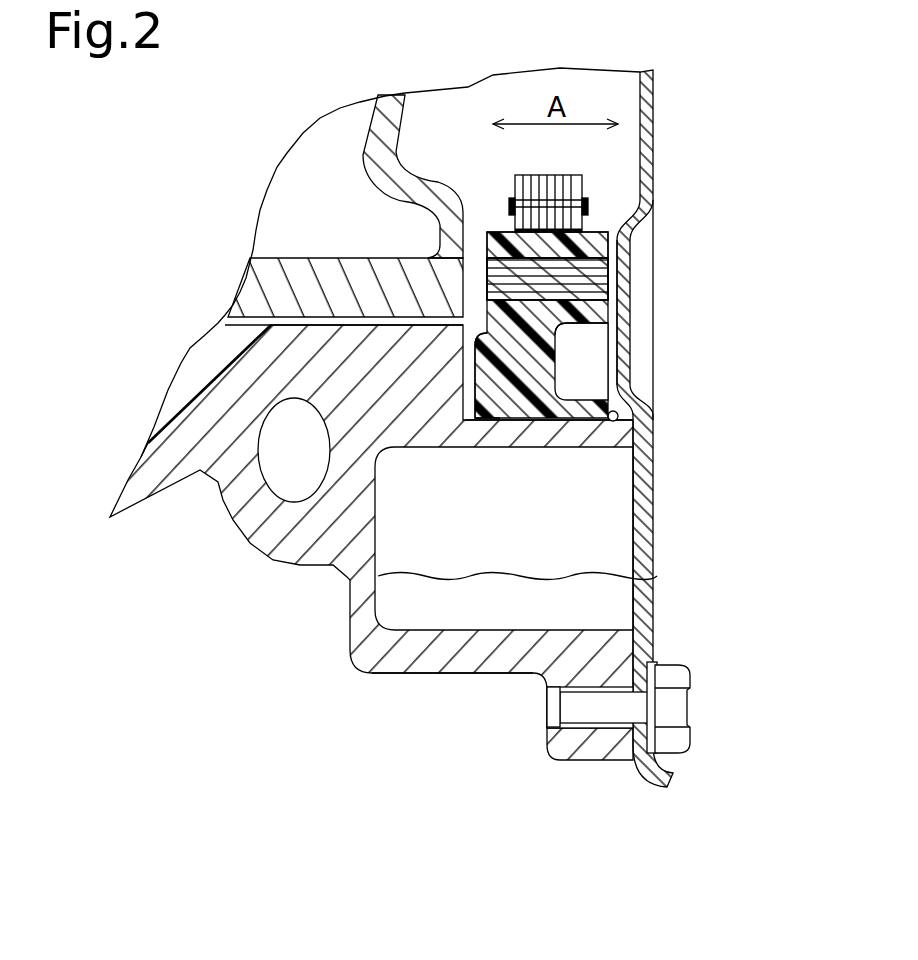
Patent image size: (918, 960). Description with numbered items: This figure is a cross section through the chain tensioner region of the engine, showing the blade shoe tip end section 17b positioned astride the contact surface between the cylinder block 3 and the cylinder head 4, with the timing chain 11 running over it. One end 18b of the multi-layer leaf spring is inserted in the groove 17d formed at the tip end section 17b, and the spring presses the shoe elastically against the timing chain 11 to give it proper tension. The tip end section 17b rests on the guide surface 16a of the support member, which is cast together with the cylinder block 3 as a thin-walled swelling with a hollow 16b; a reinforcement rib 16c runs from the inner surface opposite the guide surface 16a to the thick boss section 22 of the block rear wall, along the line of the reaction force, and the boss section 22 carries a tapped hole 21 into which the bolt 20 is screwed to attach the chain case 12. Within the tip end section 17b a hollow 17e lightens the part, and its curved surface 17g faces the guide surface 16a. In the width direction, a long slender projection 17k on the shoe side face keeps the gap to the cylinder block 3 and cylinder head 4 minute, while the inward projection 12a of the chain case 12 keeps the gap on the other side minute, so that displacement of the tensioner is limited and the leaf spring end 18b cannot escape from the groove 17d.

The cylinder block 3 is at (280, 550).
The cylinder head 4 is at (277, 278).
The timing chain 11 is at (547, 175).
The chain case 12 is at (655, 145).
The projection 12a is at (622, 287).
The guide surface 16a is at (620, 425).
The hollow 16b is at (600, 538).
The reinforcement rib 16c is at (473, 615).
The tip end section 17b is at (532, 402).
The groove 17d is at (500, 252).
The hollow 17e is at (588, 343).
The curved surface 17g is at (582, 362).
The projection 17k is at (483, 377).
The end of leaf spring 18b is at (610, 273).
The bolt 20 is at (692, 718).
The tapped hole 21 is at (557, 758).
The boss section 22 is at (607, 747).